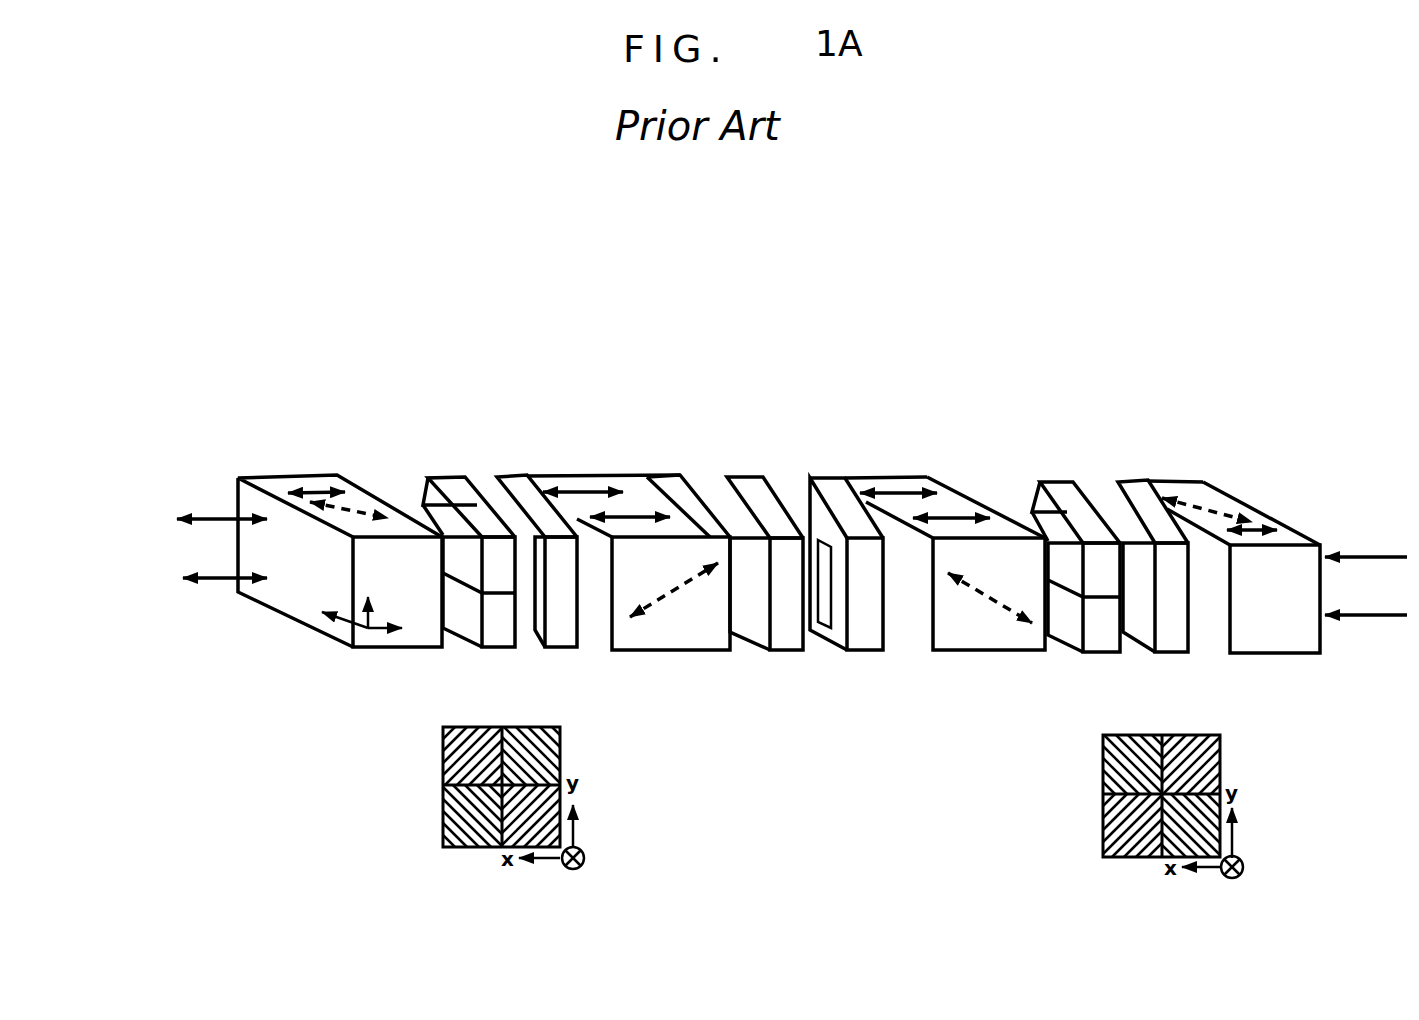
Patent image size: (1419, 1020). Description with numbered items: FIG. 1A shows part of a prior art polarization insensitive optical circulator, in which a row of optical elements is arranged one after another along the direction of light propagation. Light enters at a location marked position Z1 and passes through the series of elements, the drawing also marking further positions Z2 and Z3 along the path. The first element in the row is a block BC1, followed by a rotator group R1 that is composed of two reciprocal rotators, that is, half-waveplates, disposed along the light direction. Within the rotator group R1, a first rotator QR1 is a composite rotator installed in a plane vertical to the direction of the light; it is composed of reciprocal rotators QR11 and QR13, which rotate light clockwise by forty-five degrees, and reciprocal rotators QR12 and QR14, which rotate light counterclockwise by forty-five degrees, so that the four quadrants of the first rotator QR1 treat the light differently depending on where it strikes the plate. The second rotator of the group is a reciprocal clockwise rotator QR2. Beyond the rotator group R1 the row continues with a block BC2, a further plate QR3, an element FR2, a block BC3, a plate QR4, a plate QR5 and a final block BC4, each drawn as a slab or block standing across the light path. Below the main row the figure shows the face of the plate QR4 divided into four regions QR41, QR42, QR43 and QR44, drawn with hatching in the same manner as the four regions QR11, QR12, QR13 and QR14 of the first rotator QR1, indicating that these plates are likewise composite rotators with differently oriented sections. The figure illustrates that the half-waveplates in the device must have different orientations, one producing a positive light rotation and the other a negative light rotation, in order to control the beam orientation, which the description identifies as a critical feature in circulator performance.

The rotator group R1 is at (465, 470).
The position Z1 is at (202, 459).
The position Z2 is at (351, 460).
The position Z3 is at (417, 467).
The first birefringent crystal BC1 is at (309, 582).
The first rotator QR1 is at (493, 722).
The second rotator QR2 is at (528, 469).
The second birefringent crystal BC2 is at (628, 582).
The third quadrant retarder QR3 is at (770, 583).
The Faraday rotator FR2 is at (833, 474).
The third birefringent crystal BC3 is at (945, 583).
The fourth quadrant retarder QR4 is at (1158, 454).
The fifth quadrant retarder QR5 is at (1143, 474).
The fourth birefringent crystal BC4 is at (1277, 585).
The reciprocal rotator QR11 is at (432, 756).
The reciprocal rotator QR12 is at (581, 756).
The reciprocal rotator QR13 is at (582, 816).
The reciprocal rotator QR14 is at (432, 816).
The first quadrant of retarder QR4 QR41 is at (1090, 764).
The second quadrant of retarder QR4 QR42 is at (1238, 764).
The third quadrant of retarder QR4 QR43 is at (1242, 825).
The fourth quadrant of retarder QR4 QR44 is at (1089, 825).